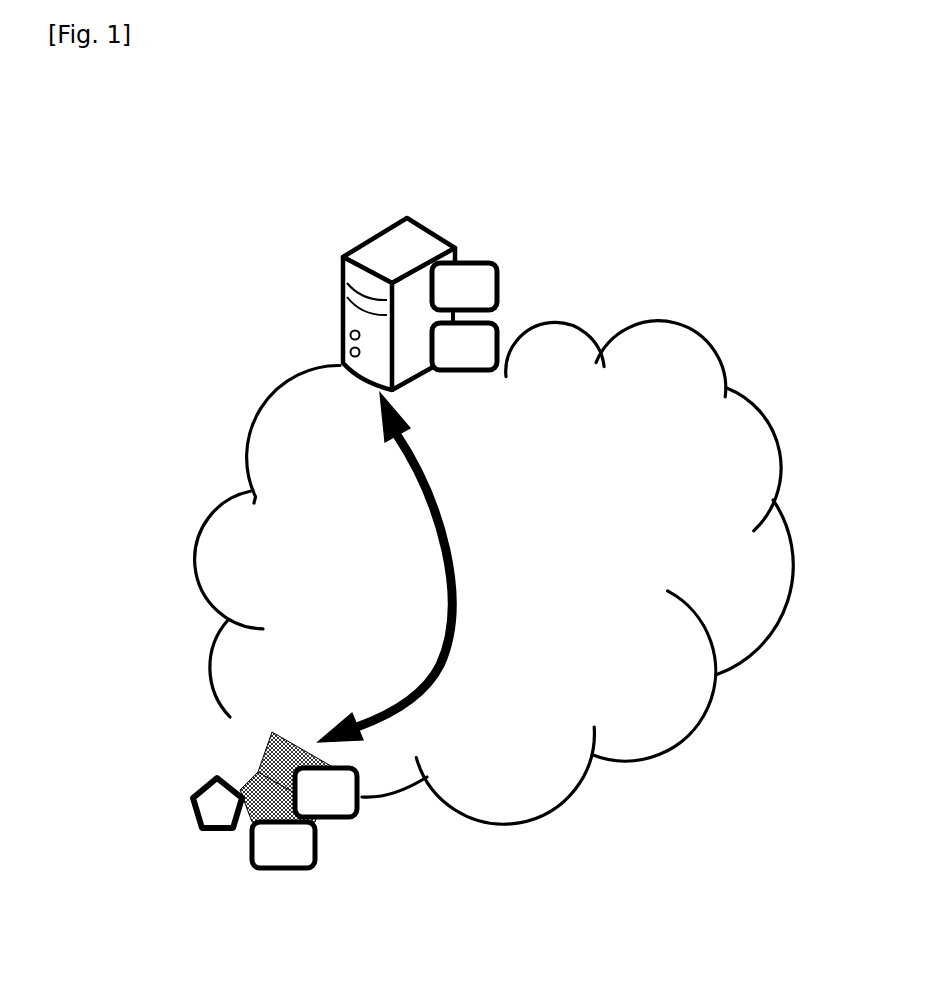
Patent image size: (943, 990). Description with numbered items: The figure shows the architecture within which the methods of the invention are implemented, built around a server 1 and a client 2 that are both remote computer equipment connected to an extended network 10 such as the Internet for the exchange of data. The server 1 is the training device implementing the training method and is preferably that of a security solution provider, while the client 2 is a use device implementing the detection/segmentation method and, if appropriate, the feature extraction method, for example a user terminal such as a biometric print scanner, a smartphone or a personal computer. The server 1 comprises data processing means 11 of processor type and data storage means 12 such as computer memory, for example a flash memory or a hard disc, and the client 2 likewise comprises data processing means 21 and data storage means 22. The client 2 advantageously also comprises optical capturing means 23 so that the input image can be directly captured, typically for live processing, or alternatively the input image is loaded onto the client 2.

The server 1 is at (412, 207).
The extended network 10 is at (252, 379).
The data processing means 11 is at (508, 361).
The data storage means 12 is at (513, 272).
The client 2 is at (243, 753).
The data processing means 21 is at (375, 830).
The data storage means 22 is at (321, 875).
The optical capturing means 23 is at (188, 830).